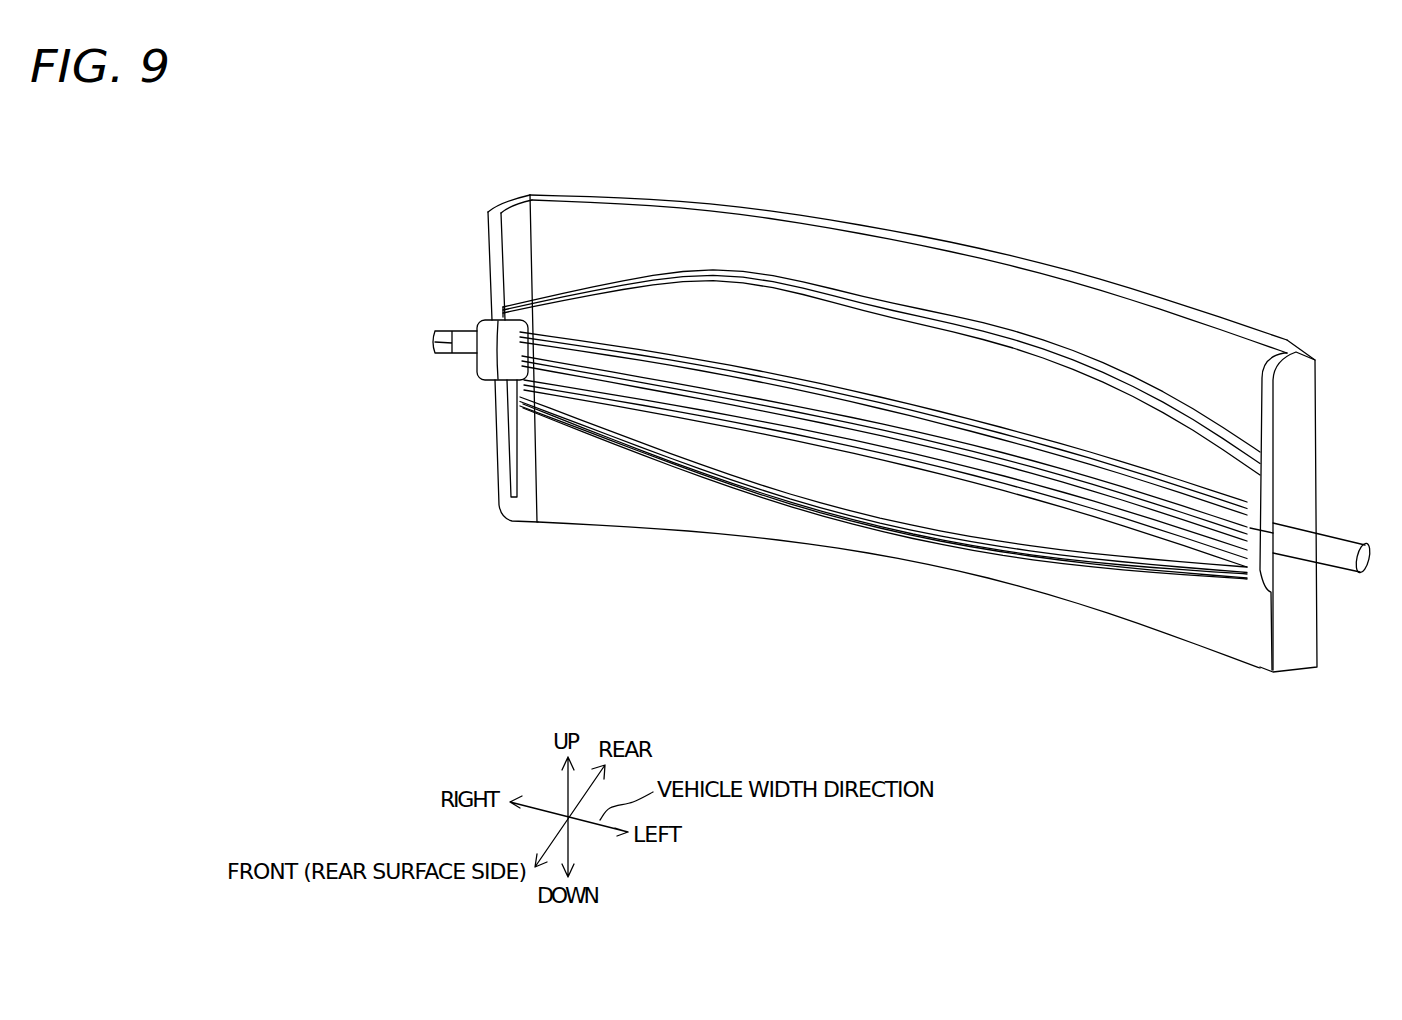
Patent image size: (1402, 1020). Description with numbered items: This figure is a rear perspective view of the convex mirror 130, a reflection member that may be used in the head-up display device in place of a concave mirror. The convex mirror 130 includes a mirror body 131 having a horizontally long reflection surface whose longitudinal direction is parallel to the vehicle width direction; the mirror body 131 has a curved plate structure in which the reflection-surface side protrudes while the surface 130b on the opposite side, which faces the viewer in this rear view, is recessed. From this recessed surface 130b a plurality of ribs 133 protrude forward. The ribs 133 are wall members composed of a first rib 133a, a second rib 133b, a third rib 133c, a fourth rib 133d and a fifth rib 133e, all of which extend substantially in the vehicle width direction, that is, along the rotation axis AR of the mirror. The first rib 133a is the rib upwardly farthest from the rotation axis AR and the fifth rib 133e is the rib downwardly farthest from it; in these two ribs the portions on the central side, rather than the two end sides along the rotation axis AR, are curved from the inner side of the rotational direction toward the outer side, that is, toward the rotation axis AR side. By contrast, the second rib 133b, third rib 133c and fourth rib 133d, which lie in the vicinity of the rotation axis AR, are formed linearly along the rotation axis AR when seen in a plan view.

The convex mirror 130 is at (902, 398).
The surface 130b is at (895, 550).
The mirror body 131 is at (785, 238).
The ribs 133 is at (839, 426).
The first rib 133a is at (628, 277).
The second rib 133b is at (557, 330).
The third rib 133c is at (532, 393).
The fourth rib 133d is at (613, 407).
The fifth rib 133e is at (1173, 565).
The rotation axis AR is at (827, 427).